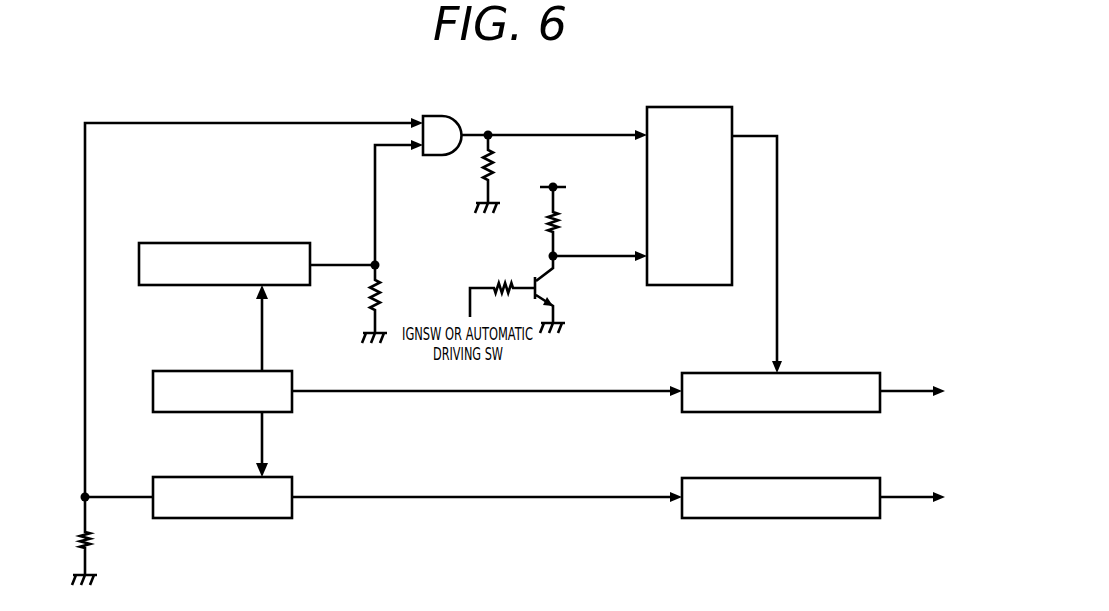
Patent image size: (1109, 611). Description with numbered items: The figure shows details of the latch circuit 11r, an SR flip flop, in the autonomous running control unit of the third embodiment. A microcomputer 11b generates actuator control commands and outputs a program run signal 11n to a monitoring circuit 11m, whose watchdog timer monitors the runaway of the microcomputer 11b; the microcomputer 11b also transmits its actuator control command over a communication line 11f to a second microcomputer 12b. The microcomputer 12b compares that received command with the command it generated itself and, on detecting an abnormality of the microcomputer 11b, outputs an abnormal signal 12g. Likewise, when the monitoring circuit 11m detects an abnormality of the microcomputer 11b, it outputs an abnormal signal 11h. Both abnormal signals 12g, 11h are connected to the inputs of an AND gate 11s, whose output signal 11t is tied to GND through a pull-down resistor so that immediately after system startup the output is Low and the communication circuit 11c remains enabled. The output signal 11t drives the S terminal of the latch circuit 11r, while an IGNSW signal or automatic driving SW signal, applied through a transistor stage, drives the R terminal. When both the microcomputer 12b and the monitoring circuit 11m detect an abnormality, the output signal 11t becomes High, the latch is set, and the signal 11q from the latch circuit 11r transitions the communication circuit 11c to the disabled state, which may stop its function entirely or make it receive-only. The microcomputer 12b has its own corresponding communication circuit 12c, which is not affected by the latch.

The abnormal signal 12g is at (158, 122).
The AND gate 11s is at (443, 115).
The output signal 11t is at (608, 134).
The latch circuit 11r is at (690, 106).
The signal from the latch circuit 11q is at (778, 260).
The abnormal signal 11h is at (374, 187).
The monitoring circuit 11m is at (178, 242).
The program run signal 11n is at (263, 318).
The microcomputer 11b is at (183, 370).
The communication line 11f is at (263, 447).
The microcomputer 12b is at (183, 519).
The communication circuit 11c is at (850, 413).
The communication circuit 12c is at (850, 519).